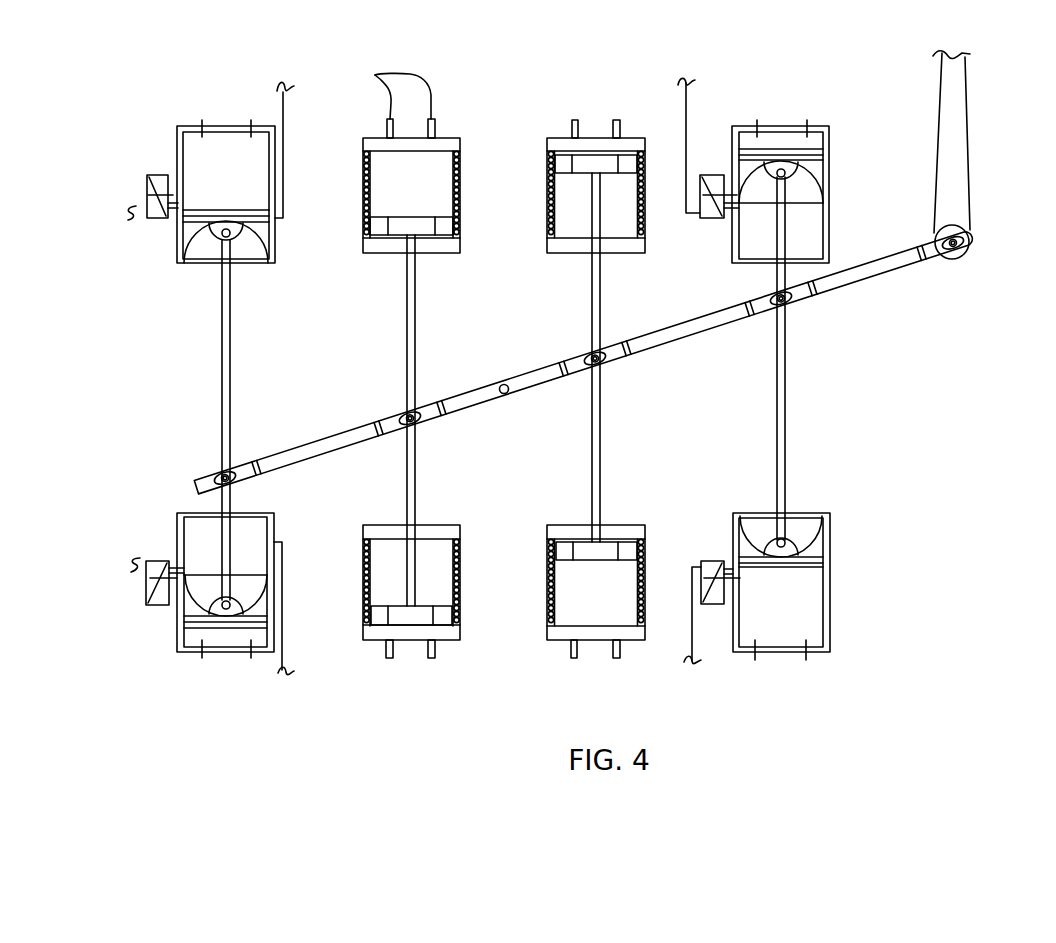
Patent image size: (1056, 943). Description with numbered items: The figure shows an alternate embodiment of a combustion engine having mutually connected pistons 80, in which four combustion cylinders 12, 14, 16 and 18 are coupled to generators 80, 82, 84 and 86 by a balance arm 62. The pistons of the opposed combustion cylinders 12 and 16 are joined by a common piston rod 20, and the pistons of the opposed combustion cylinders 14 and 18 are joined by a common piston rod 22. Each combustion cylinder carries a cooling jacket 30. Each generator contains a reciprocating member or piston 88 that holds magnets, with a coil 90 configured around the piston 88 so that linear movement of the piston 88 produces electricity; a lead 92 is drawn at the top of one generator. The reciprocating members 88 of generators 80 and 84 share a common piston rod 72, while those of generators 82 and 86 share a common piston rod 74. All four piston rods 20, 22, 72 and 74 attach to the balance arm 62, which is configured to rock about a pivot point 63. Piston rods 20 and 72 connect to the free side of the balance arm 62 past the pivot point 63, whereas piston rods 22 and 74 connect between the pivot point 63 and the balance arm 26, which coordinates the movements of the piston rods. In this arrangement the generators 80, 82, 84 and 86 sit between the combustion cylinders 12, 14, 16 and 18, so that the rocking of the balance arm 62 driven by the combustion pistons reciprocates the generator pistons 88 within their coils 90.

The combustion cylinder 12 is at (207, 168).
The combustion cylinder 14 is at (813, 140).
The combustion cylinder 16 is at (193, 637).
The combustion cylinder 18 is at (802, 610).
The common piston rod 20 is at (222, 327).
The common piston rod 22 is at (787, 415).
The balance arm 26 is at (970, 124).
The cooling jacket 30 is at (177, 148).
The balance arm 62 is at (530, 370).
The pivot point 63 is at (502, 393).
The common piston rod 72 is at (407, 356).
The common piston rod 74 is at (600, 445).
The generator 80 is at (322, 130).
The generator 82 is at (635, 138).
The generator 84 is at (446, 641).
The generator 86 is at (562, 640).
The reciprocating member 88 is at (420, 217).
The coil 90 is at (460, 160).
The electrical leads 92 is at (375, 75).